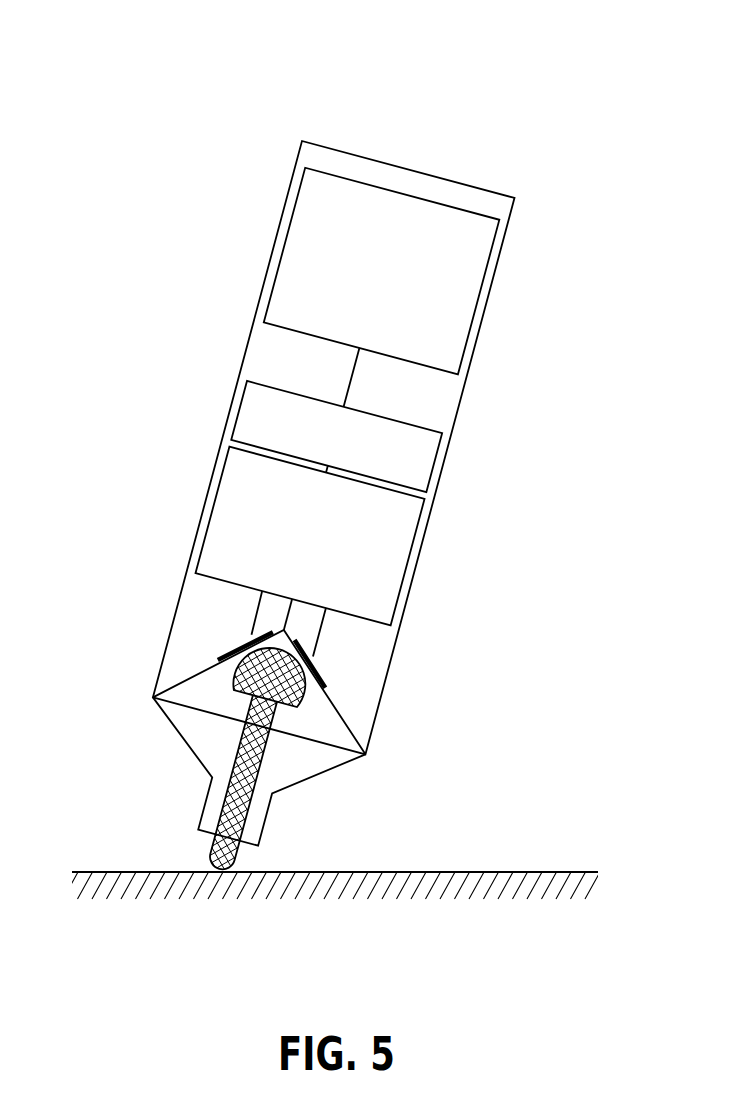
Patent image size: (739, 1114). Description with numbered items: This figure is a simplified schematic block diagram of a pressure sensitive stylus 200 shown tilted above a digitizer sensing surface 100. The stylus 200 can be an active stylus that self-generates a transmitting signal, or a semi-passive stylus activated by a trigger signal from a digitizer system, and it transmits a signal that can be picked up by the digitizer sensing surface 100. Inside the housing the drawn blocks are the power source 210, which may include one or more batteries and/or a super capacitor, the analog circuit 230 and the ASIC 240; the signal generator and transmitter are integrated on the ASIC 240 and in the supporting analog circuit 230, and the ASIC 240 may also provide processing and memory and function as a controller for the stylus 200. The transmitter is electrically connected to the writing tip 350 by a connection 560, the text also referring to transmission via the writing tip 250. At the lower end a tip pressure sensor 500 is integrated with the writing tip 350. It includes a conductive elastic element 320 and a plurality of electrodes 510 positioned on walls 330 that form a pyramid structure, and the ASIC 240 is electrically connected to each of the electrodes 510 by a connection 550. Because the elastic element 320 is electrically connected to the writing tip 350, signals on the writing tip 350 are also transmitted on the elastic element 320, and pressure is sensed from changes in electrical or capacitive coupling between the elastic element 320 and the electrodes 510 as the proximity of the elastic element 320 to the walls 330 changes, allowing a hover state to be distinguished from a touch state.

The digitizer sensing surface 100 is at (460, 872).
The stylus 200 is at (315, 112).
The power source 210 is at (287, 232).
The analog circuit 230 is at (229, 421).
The ASIC 240 is at (206, 525).
The writing tip 250 is at (244, 355).
The elastic element 320 is at (237, 712).
The walls 330 is at (207, 672).
The writing tip 350 is at (263, 757).
The tip pressure sensor 500 is at (185, 759).
The electrodes 510 is at (225, 652).
The connection 550 is at (253, 627).
The connection 560 is at (288, 607).